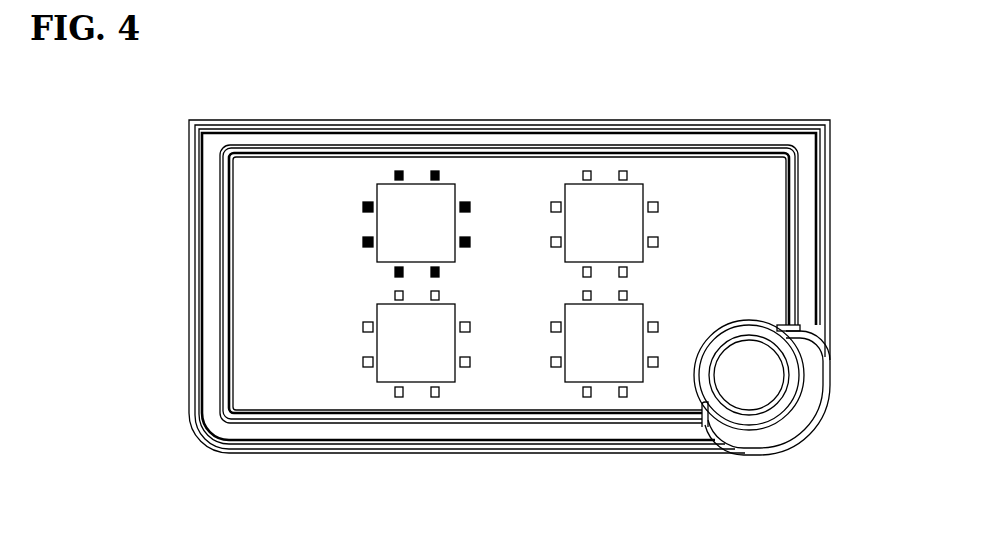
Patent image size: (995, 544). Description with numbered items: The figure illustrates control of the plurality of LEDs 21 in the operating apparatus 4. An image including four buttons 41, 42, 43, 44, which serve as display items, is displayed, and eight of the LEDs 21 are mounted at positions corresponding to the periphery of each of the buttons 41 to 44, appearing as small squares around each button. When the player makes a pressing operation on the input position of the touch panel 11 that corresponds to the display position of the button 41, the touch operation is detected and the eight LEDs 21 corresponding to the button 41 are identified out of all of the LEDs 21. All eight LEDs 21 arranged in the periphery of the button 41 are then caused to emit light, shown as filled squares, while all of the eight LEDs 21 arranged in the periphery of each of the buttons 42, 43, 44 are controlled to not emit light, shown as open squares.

The operating apparatus 4 is at (722, 86).
The touch panel 11 is at (752, 260).
The LEDs 21 is at (398, 171).
The button 41 is at (443, 205).
The button 42 is at (629, 205).
The button 43 is at (443, 363).
The button 44 is at (629, 363).